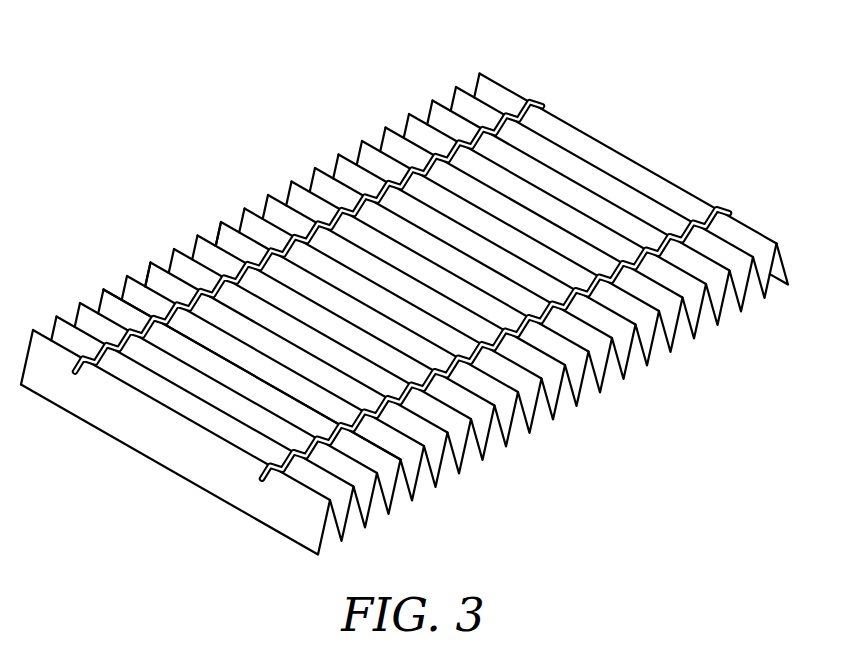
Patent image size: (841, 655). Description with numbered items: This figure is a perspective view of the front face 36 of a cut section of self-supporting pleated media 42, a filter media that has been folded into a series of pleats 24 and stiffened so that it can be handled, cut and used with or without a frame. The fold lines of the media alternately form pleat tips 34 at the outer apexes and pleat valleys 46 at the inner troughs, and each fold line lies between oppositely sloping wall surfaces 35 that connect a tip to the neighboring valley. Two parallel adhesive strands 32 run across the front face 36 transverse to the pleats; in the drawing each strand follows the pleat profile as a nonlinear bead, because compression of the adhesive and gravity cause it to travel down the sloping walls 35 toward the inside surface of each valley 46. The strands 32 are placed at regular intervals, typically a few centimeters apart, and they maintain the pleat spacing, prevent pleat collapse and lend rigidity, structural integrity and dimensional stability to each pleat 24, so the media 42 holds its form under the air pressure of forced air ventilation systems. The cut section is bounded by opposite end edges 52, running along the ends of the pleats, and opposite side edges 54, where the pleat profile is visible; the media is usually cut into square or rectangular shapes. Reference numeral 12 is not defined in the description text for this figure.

The filter media sheet 12 is at (80, 309).
The pleat 24 is at (112, 284).
The adhesive strand 32 is at (540, 109).
The pleat tip 34 is at (145, 287).
The sloping wall surface 35 is at (247, 226).
The front face 36 is at (372, 106).
The self-supporting pleated media 42 is at (409, 286).
The pleat valley 46 is at (697, 338).
The end edge 52 is at (138, 456).
The side edge 54 is at (413, 308).